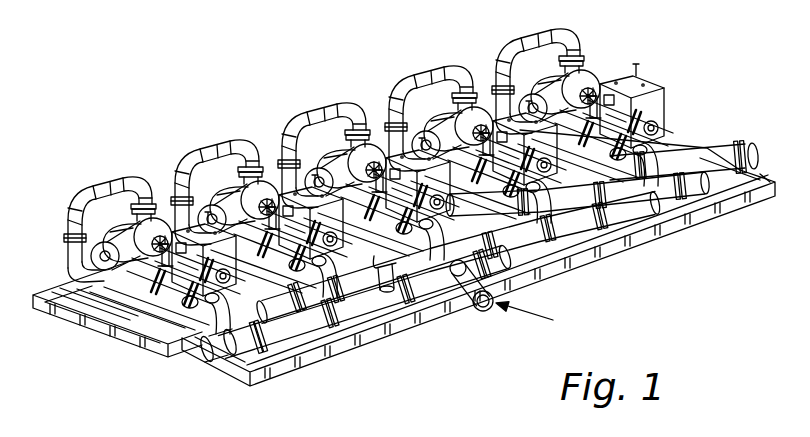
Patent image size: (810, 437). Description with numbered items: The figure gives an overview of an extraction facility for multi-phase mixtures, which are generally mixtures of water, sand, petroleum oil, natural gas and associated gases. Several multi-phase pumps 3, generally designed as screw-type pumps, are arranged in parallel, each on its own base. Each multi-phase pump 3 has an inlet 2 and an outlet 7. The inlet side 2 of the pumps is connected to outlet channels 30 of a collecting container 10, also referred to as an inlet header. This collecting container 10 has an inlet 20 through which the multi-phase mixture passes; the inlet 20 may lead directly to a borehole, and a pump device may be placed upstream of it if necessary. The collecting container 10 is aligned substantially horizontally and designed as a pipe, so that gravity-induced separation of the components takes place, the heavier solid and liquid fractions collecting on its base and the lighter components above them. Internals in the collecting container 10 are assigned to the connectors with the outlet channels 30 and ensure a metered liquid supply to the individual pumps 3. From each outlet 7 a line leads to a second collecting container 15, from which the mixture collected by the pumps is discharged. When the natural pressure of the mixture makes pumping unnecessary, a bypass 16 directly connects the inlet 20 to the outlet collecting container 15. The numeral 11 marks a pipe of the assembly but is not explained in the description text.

The inlet 2 is at (97, 243).
The multi-phase pump 3 is at (127, 230).
The outlet 7 is at (142, 195).
The collecting container 10 is at (360, 307).
The header pipe 11 is at (447, 263).
The collecting container 15 is at (257, 337).
The bypass 16 is at (550, 277).
The inlet 20 is at (472, 308).
The outlet channel 30 is at (297, 297).